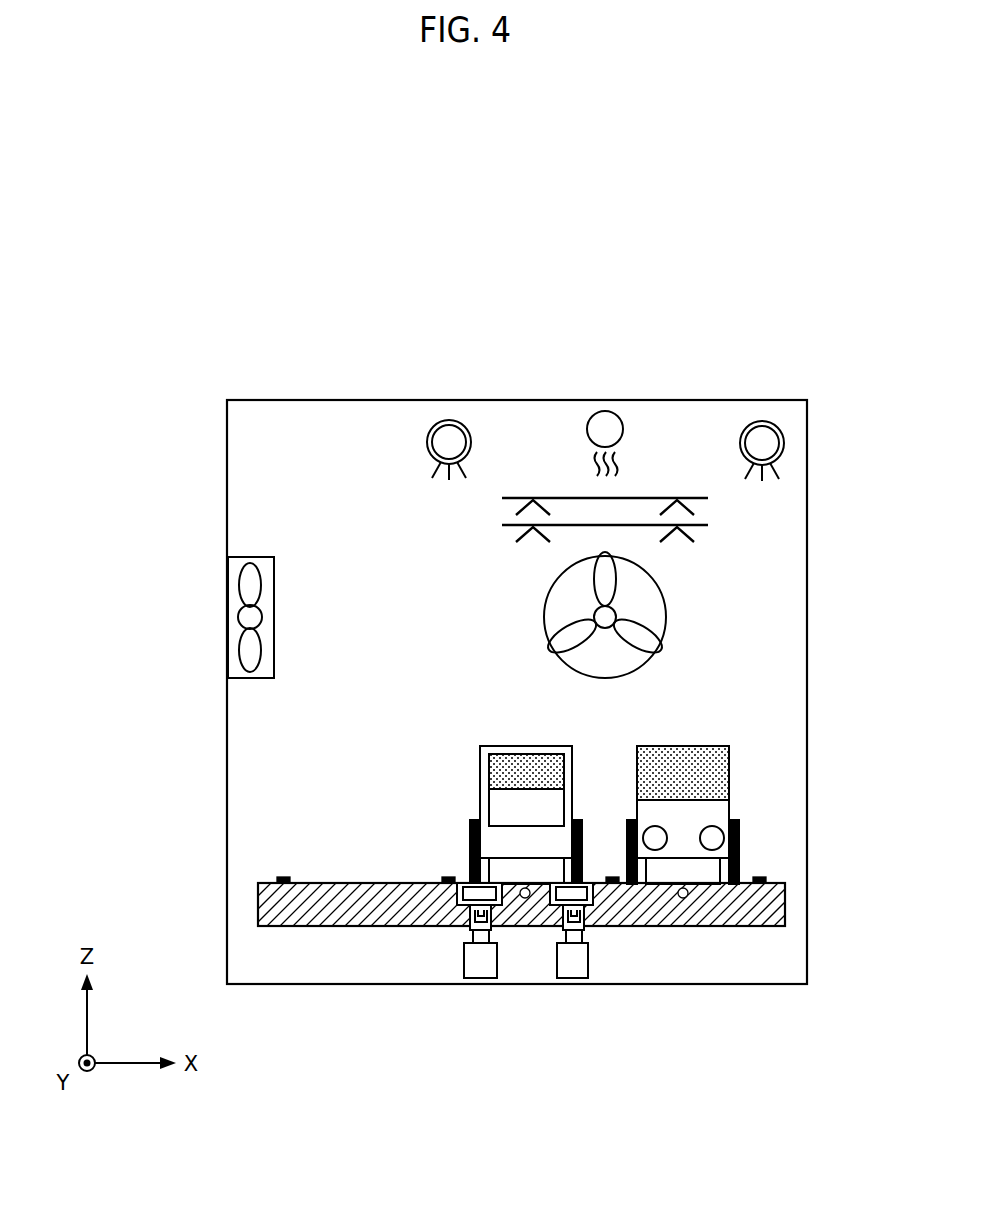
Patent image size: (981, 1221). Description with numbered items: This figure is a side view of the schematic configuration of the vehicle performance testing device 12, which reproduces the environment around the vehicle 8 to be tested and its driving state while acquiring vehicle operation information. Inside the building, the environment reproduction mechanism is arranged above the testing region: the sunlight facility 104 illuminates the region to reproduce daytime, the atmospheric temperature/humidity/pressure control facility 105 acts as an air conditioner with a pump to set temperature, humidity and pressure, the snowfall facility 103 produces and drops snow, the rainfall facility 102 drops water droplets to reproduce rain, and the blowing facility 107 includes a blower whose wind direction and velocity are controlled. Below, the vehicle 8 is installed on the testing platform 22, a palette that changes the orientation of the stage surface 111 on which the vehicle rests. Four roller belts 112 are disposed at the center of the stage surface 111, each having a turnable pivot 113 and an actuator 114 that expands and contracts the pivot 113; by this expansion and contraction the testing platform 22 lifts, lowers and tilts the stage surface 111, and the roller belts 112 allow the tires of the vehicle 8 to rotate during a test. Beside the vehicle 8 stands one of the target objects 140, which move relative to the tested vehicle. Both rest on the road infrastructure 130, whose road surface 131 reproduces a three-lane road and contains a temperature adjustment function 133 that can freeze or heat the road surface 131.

The vehicle performance testing device 12 is at (768, 366).
The sunlight facility 104 is at (787, 442).
The atmospheric temperature/humidity/pressure control facility 105 is at (623, 429).
The snowfall facility 103 is at (697, 507).
The rainfall facility 102 is at (697, 534).
The blowing facility 107 is at (553, 580).
The vehicle to be tested 8 is at (455, 753).
The target objects 140 is at (752, 752).
The road infrastructure 130 is at (775, 945).
The road surface 131 is at (773, 883).
The temperature adjustment function 133 is at (683, 898).
The testing platform 22 is at (420, 944).
The stage surface 111 is at (457, 884).
The pivot 113 is at (468, 928).
The actuator 114 is at (497, 962).
The roller belt 112 is at (525, 898).